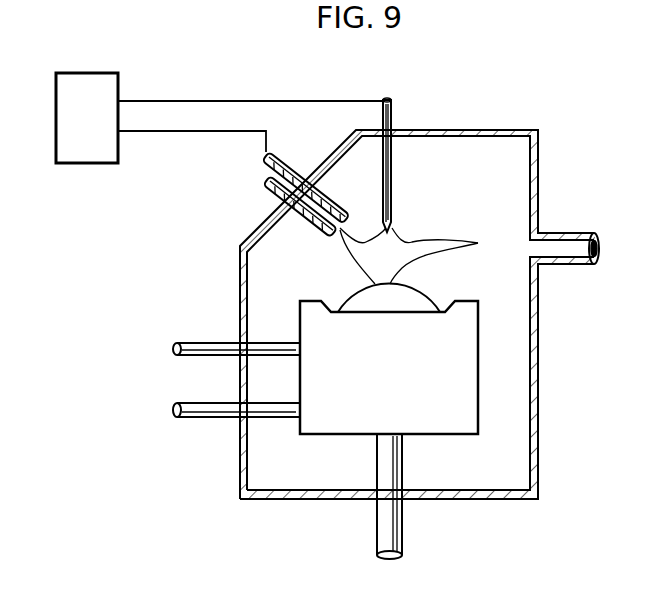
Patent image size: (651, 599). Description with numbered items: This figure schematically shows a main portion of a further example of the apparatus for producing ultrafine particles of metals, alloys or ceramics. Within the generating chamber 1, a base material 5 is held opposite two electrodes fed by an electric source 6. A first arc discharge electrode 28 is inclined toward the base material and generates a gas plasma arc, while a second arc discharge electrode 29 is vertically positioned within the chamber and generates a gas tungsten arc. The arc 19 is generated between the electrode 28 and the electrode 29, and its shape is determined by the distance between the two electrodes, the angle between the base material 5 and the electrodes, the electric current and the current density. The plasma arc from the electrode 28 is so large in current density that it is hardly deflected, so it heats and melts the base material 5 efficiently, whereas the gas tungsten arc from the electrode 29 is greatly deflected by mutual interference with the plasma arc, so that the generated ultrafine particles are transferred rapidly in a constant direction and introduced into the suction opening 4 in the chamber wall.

The generating chamber 1 is at (490, 128).
The suction opening 4 is at (532, 250).
The base material 5 is at (427, 298).
The electric source 6 is at (91, 73).
The electric arc 19 is at (407, 243).
The first arc discharge electrode 28 is at (278, 188).
The second arc discharge electrode 29 is at (393, 104).